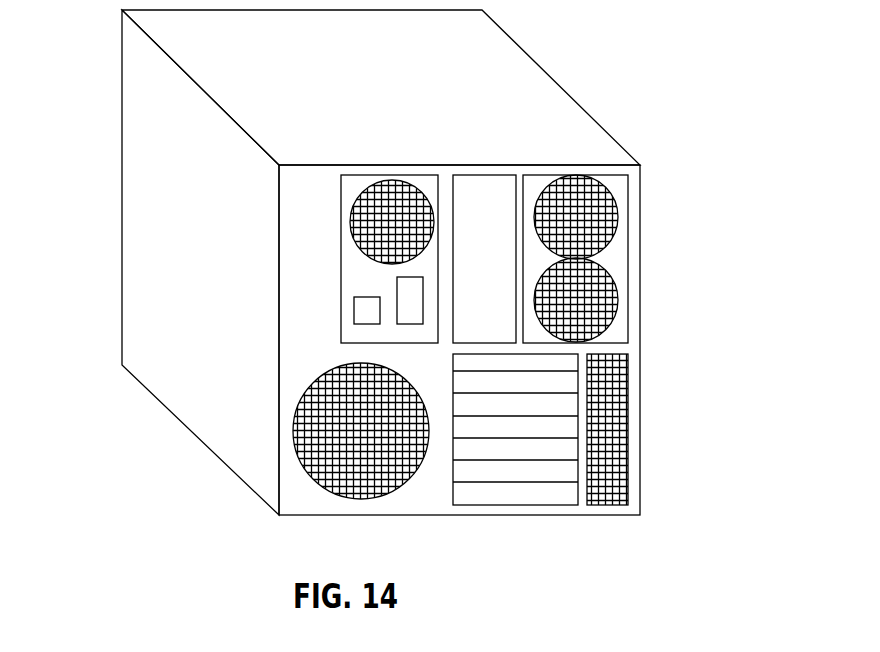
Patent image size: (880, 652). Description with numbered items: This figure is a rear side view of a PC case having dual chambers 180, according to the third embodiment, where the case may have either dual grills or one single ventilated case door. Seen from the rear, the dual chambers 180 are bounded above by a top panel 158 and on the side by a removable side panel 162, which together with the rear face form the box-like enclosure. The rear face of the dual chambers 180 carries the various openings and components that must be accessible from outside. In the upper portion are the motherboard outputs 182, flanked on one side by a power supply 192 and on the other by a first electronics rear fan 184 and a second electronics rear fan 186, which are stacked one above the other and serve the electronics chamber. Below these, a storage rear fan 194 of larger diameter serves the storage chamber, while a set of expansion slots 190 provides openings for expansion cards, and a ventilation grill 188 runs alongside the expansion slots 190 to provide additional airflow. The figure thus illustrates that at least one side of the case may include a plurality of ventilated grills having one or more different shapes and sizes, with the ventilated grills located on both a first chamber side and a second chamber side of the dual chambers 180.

The top panel 158 is at (508, 53).
The removable side panel 162 is at (137, 261).
The dual chambers 180 is at (638, 81).
The motherboard outputs 182 is at (492, 175).
The first electronics rear fan 184 is at (615, 217).
The second electronics rear fan 186 is at (615, 298).
The ventilation grill 188 is at (627, 418).
The expansion slots 190 is at (523, 505).
The power supply 192 is at (341, 259).
The storage rear fan 194 is at (298, 462).